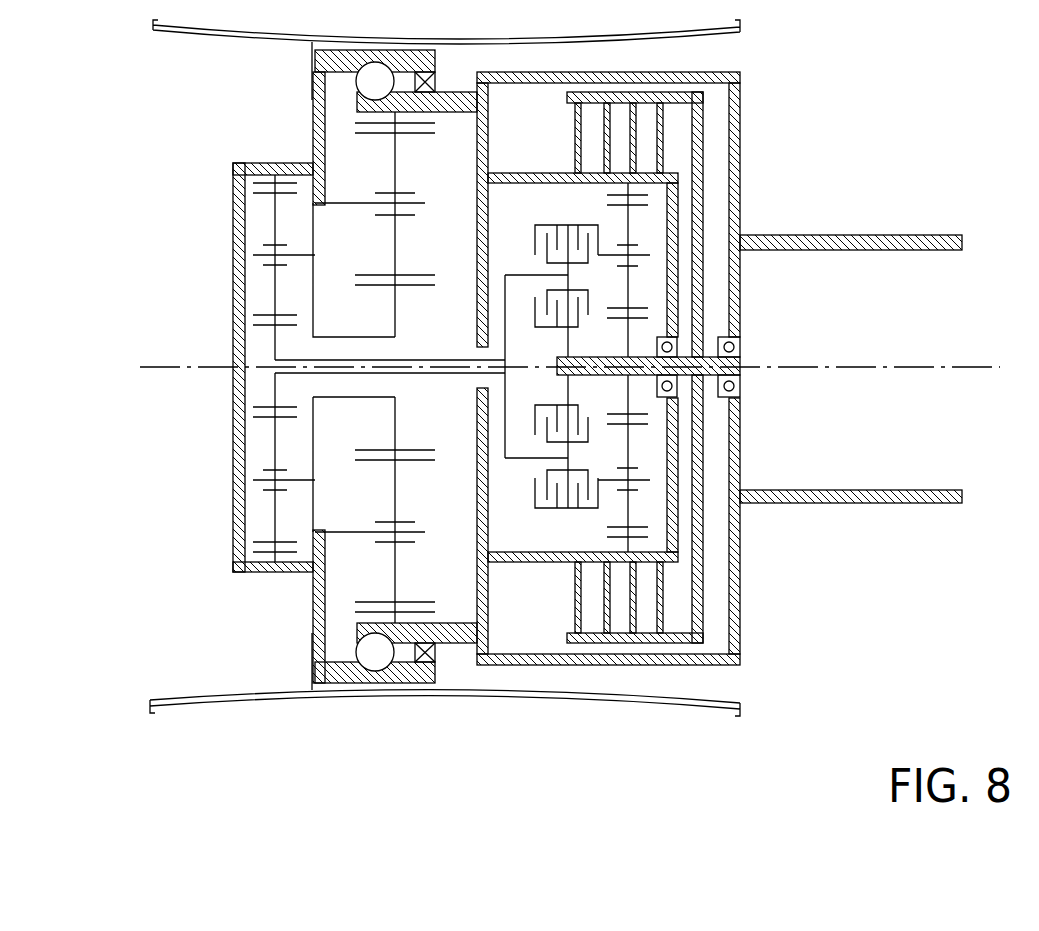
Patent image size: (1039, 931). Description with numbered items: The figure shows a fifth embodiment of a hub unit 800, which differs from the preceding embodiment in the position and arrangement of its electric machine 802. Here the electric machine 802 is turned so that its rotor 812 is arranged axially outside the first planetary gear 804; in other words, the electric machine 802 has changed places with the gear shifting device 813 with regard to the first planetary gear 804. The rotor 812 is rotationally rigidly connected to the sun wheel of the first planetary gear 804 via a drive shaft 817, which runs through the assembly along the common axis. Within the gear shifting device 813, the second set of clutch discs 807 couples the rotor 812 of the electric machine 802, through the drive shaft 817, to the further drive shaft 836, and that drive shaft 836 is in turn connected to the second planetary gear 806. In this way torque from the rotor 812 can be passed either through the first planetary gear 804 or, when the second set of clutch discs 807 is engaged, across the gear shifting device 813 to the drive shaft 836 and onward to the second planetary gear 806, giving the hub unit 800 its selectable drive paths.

The hub unit 800 is at (607, 750).
The electric machine 802 is at (635, 605).
The first planetary gear 804 is at (600, 523).
The second planetary gear 806 is at (270, 600).
The second set of clutch discs 807 is at (528, 485).
The rotor 812 is at (700, 573).
The gear shifting device 813 is at (525, 503).
The drive shaft 817 is at (642, 377).
The drive shaft 836 is at (310, 374).